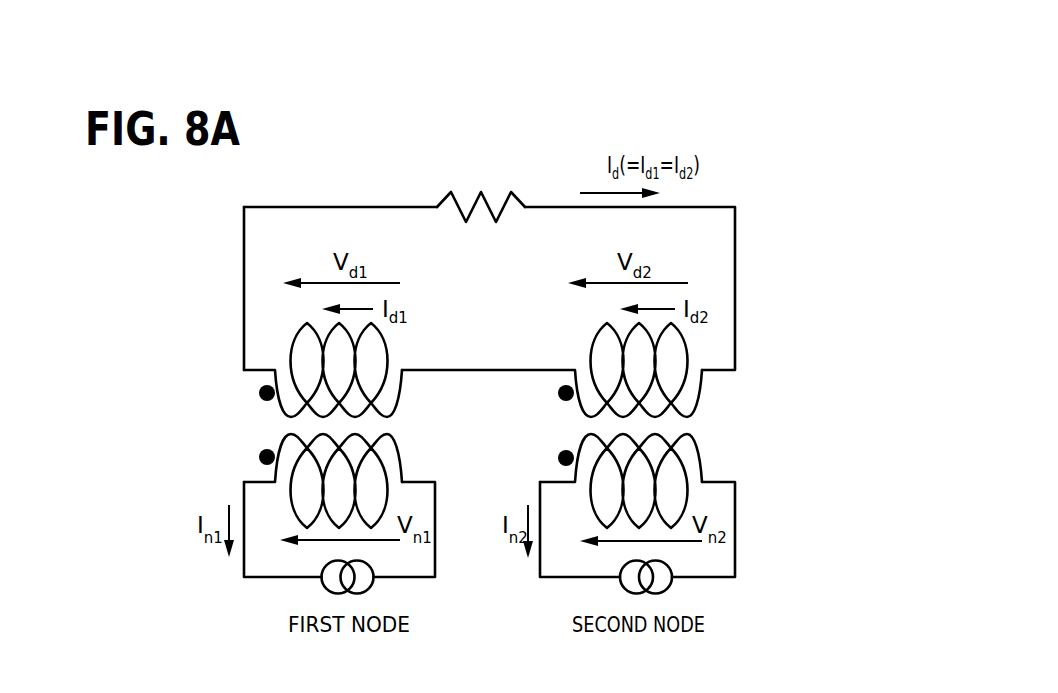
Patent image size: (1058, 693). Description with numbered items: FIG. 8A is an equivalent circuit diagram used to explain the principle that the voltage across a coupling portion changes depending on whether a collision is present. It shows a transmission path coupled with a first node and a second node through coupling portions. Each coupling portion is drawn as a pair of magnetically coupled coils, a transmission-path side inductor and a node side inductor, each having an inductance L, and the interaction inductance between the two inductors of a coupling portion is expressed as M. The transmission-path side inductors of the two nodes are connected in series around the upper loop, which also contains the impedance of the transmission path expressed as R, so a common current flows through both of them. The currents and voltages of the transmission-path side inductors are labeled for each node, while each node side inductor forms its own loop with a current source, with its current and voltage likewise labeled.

The impedance of the transmission path R is at (481, 191).
The inductance L is at (323, 425).
The interaction inductance M is at (238, 384).